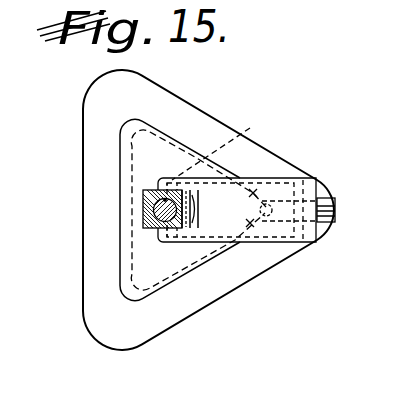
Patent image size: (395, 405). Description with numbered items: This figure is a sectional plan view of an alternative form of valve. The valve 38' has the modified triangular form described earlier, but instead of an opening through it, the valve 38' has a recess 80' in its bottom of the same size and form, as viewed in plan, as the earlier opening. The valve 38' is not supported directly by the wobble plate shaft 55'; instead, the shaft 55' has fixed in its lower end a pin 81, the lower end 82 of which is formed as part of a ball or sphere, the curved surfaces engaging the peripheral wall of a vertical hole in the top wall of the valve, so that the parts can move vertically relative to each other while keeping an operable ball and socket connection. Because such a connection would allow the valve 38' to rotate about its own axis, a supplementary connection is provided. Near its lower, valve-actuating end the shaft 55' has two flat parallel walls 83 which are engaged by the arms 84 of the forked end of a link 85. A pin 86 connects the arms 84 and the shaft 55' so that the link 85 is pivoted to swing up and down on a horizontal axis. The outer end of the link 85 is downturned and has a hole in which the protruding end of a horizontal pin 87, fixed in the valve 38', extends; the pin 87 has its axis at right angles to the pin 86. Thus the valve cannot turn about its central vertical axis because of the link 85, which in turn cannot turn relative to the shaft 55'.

The valve 38' is at (184, 210).
The recess 80' is at (193, 209).
The arms 84 is at (161, 178).
The pin 86 is at (230, 175).
The lower end 82 is at (250, 193).
The link 85 is at (247, 223).
The horizontal pin 87 is at (336, 210).
The pin 81 is at (152, 211).
The wobble plate shaft 55' is at (109, 204).
The flat parallel walls 83 is at (149, 187).